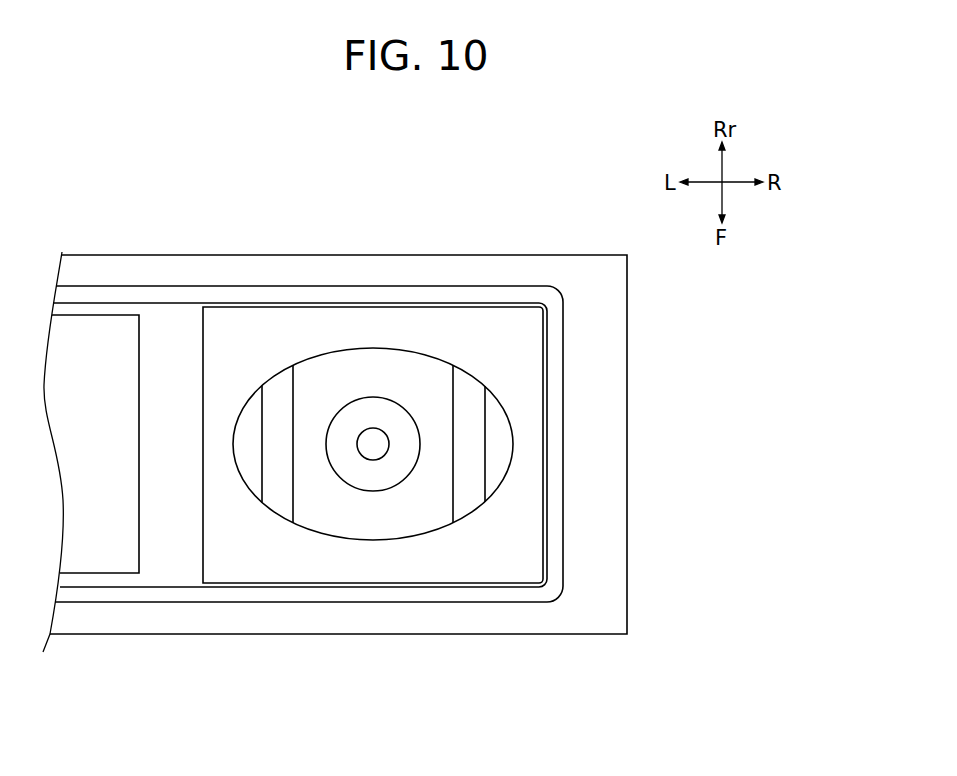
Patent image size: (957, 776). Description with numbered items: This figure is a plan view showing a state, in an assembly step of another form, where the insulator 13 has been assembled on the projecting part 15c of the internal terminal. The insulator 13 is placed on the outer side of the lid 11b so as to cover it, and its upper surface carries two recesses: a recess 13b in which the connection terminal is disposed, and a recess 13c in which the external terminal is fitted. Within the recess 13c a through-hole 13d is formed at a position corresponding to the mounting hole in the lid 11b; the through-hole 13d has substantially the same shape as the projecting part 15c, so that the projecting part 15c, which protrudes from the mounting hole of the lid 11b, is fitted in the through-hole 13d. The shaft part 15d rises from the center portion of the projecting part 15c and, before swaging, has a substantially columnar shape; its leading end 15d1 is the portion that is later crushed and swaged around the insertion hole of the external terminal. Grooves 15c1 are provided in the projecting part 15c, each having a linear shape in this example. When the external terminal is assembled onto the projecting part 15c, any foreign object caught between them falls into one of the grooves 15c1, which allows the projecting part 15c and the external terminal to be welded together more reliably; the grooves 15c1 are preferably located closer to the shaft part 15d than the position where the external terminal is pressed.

The lid 11b is at (627, 374).
The insulator 13 is at (513, 287).
The recess 13b is at (120, 315).
The recess 13c is at (306, 303).
The through-hole 13d is at (360, 350).
The projecting part 15c is at (327, 510).
The groove 15c1 is at (262, 423).
The shaft part 15d is at (402, 487).
The leading end 15d1 is at (392, 414).